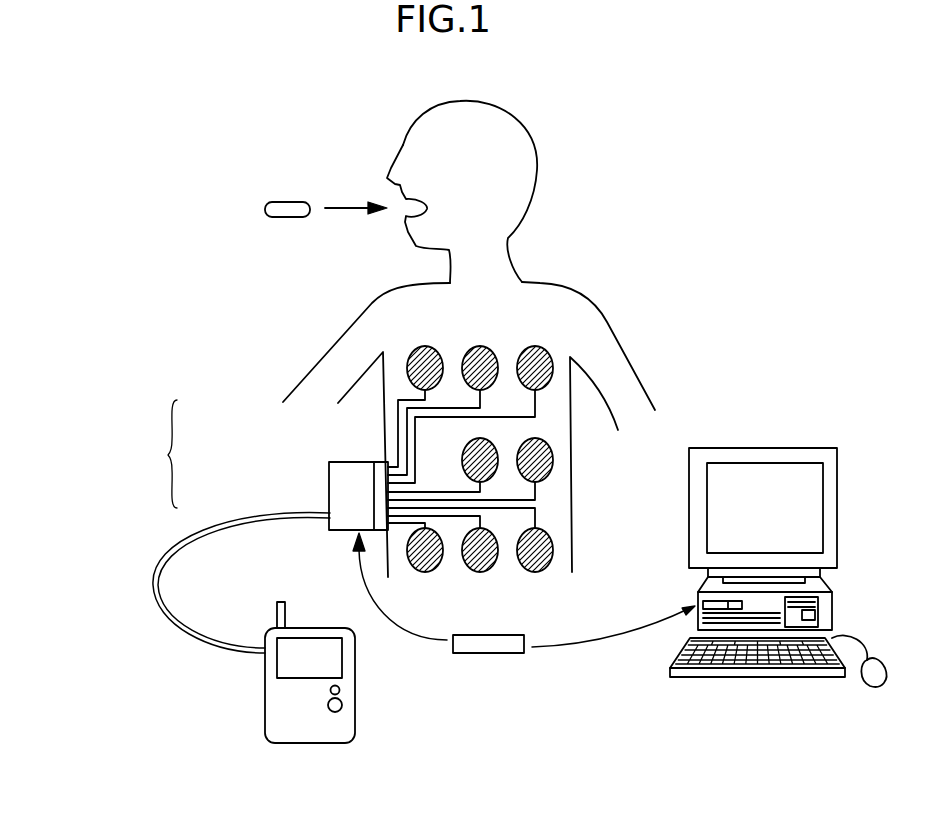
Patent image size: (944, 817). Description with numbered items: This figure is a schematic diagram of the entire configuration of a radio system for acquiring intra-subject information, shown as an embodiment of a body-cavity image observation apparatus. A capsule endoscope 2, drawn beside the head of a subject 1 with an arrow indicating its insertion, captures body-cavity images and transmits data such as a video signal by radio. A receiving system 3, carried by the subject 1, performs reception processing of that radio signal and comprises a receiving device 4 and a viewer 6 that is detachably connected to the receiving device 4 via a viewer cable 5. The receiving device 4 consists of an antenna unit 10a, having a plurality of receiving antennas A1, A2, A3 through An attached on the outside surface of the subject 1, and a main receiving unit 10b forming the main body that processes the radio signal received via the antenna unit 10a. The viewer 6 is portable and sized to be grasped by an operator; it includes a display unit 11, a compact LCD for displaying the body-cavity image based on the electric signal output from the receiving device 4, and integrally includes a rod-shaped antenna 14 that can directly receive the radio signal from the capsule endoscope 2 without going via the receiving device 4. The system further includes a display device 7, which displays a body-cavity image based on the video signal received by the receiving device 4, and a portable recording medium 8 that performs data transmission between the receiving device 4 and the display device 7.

The subject 1 is at (572, 126).
The capsule endoscope 2 is at (290, 202).
The receiving system 3 is at (168, 455).
The receiving device 4 is at (280, 465).
The viewer cable 5 is at (153, 575).
The viewer 6 is at (302, 604).
The display device 7 is at (750, 448).
The portable recording medium 8 is at (483, 653).
The antenna unit 10a is at (383, 462).
The main receiving unit 10b is at (350, 462).
The display unit 11 is at (350, 660).
The antenna 14 is at (287, 617).
The receiving antenna A1 is at (424, 346).
The receiving antenna A2 is at (479, 346).
The receiving antenna A3 is at (534, 346).
The receiving antenna An is at (536, 572).